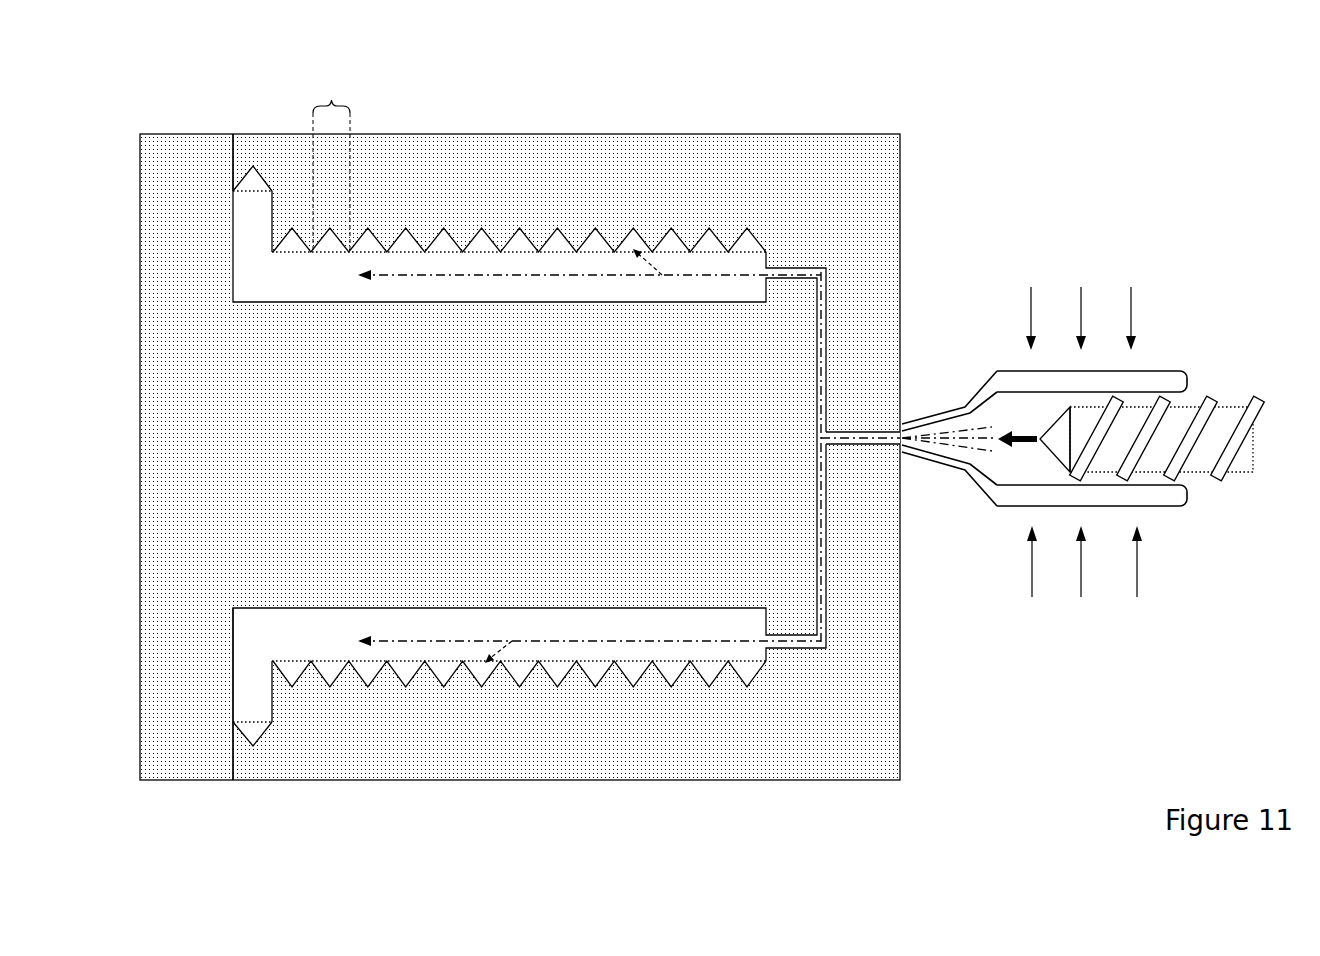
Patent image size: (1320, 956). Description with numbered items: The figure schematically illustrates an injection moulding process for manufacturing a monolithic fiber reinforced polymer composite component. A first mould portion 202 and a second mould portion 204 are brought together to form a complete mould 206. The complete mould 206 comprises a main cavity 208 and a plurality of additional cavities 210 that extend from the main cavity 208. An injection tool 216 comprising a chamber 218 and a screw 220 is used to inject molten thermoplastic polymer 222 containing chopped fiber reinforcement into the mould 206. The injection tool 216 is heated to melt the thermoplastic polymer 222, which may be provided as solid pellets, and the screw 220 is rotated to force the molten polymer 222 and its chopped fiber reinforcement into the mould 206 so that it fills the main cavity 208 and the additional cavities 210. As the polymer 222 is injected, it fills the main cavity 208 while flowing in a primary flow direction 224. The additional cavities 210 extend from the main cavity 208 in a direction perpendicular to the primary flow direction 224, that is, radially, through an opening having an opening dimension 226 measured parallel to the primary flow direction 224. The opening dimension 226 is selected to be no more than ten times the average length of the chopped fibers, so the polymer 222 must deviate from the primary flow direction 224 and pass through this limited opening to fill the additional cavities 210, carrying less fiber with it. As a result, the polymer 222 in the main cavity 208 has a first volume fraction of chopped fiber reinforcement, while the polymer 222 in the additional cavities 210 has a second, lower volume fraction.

The first mould portion 202 is at (180, 165).
The second mould portion 204 is at (397, 177).
The complete mould 206 is at (781, 106).
The main cavity 208 is at (259, 283).
The additional cavities 210 is at (557, 242).
The injection tool 216 is at (1211, 308).
The chamber 218 is at (1025, 412).
The screw 220 is at (1212, 448).
The thermoplastic polymer 222 is at (925, 440).
The primary flow direction 224 is at (600, 275).
The opening dimension 226 is at (332, 158).